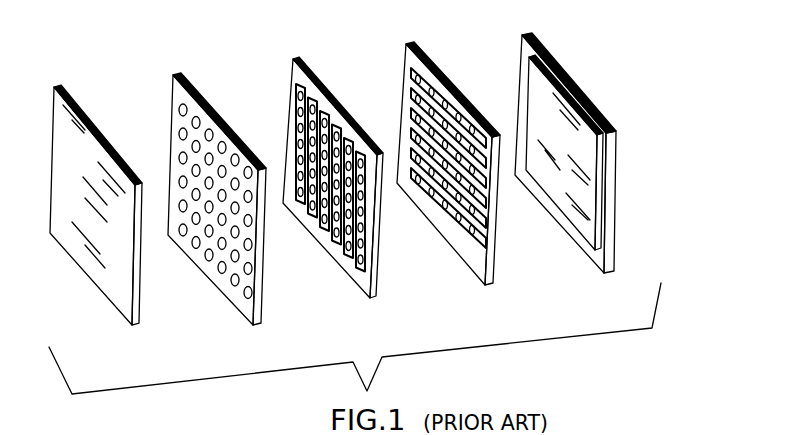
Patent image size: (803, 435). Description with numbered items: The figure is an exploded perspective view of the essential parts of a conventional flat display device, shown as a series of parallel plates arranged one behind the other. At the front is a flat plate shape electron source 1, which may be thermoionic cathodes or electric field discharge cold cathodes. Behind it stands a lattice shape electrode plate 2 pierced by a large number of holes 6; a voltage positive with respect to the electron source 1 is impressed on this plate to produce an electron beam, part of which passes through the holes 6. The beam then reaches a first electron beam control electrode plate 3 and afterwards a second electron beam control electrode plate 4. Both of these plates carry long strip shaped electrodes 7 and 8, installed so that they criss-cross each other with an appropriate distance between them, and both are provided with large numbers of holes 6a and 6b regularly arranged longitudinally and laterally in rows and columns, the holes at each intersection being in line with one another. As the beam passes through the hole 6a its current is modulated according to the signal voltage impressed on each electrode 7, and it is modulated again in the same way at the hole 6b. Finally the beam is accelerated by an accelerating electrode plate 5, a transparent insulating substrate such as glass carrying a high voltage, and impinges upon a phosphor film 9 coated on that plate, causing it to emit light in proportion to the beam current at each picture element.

The flat plate shape electron source 1 is at (123, 308).
The lattice shape electrode plate 2 is at (200, 211).
The first electron beam control electrode plate 3 is at (322, 190).
The second electron beam control electrode plate 4 is at (438, 172).
The accelerating electrode plate 5 is at (600, 257).
The holes 6 is at (181, 110).
The holes 6a is at (310, 103).
The holes 6b is at (427, 88).
The long strip shaped electrodes 7 is at (313, 165).
The long strip shaped electrodes 8 is at (431, 138).
The phosphor film 9 is at (533, 73).